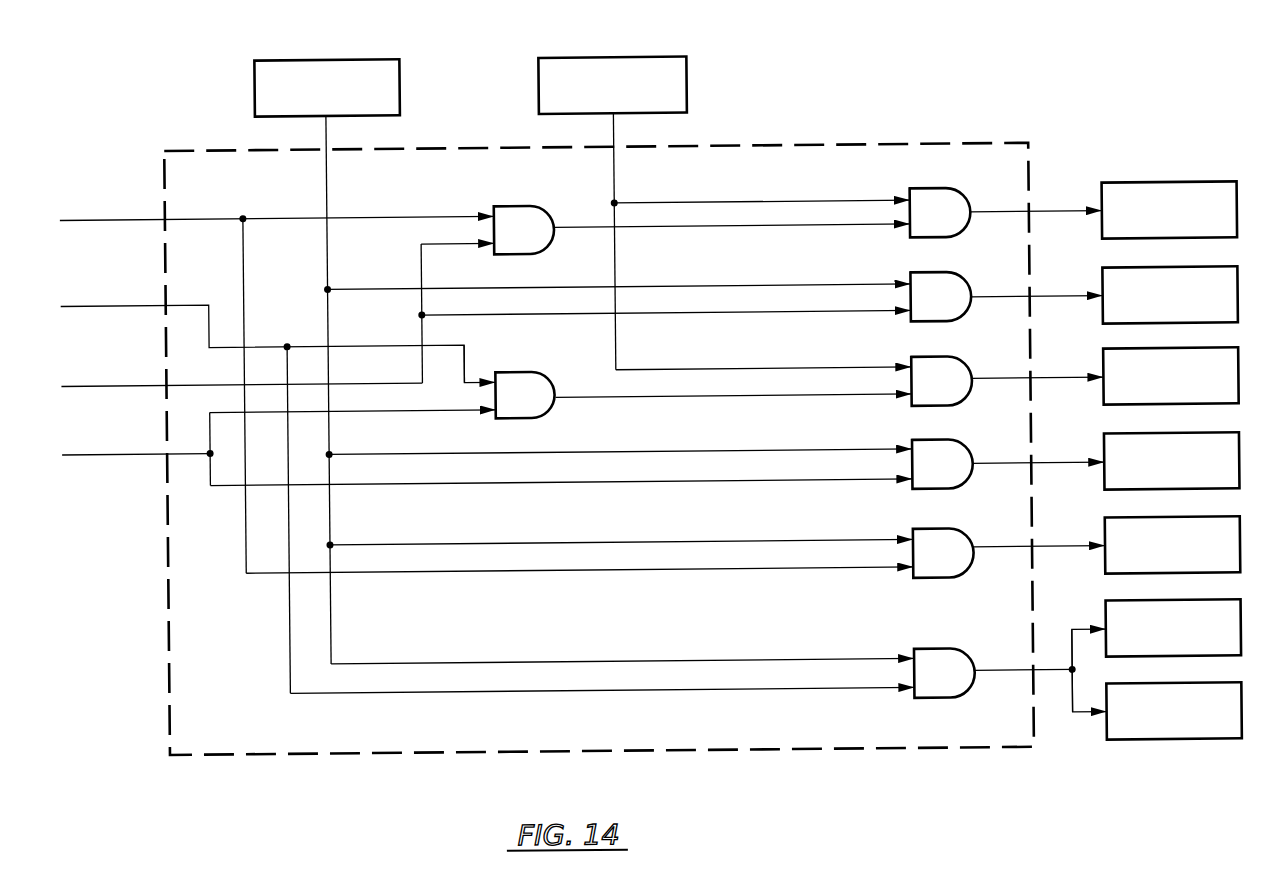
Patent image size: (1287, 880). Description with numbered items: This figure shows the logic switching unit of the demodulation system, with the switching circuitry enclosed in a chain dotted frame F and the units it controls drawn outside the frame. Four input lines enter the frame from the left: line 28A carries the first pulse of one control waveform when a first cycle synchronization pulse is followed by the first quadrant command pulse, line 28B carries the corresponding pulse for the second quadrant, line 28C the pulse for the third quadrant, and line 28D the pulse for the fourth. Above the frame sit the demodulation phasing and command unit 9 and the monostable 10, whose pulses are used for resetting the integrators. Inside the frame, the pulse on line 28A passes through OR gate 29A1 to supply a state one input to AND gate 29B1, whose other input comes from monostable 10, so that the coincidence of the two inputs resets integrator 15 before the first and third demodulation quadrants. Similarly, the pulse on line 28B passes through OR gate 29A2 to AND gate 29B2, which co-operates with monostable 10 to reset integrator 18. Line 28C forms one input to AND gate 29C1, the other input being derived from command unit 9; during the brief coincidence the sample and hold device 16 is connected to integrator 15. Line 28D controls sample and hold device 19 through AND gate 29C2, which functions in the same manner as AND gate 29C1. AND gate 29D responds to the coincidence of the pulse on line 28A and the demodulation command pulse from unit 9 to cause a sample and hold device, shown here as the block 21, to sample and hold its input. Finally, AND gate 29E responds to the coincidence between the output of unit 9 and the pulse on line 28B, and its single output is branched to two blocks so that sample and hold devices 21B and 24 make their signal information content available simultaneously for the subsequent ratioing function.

The demodulation phasing and command unit 9 is at (258, 79).
The monostable 10 is at (690, 85).
The chain dotted frame F is at (167, 662).
The line 28A is at (112, 214).
The line 28B is at (112, 300).
The line 28C is at (115, 380).
The line 28D is at (119, 448).
The OR gate 29A1 is at (553, 207).
The OR gate 29A2 is at (550, 415).
The AND gate 29B1 is at (918, 241).
The AND gate 29C1 is at (918, 325).
The AND gate 29B2 is at (918, 409).
The AND gate 29C2 is at (918, 492).
The AND gate 29D is at (918, 581).
The AND gate 29E is at (918, 701).
The integrator 15 is at (1151, 187).
The sample and hold device 16 is at (1224, 272).
The integrator 18 is at (1224, 353).
The sample and hold device 19 is at (1225, 438).
The output unit 21 is at (1224, 522).
The sample and hold device 21B is at (1220, 605).
The sample and hold device 24 is at (1209, 744).